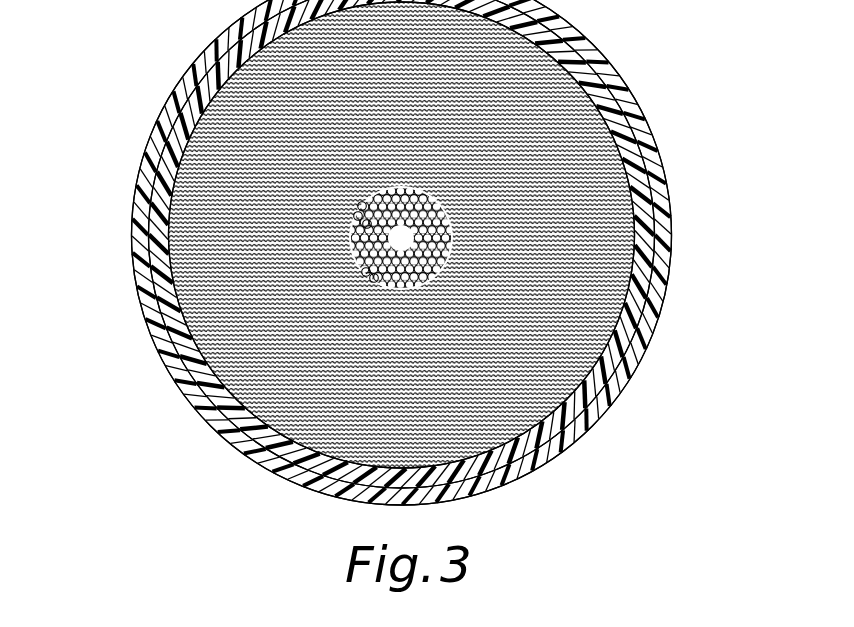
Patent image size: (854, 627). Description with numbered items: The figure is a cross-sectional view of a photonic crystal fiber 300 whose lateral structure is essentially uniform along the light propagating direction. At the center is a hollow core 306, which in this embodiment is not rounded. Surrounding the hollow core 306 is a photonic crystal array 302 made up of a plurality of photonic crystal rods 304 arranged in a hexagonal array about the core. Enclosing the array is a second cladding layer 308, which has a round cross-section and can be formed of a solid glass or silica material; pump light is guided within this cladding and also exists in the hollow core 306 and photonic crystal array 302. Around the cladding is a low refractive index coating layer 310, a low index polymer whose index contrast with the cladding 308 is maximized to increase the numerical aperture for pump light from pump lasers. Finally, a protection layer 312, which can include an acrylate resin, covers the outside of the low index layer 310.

The photonic crystal fiber 300 is at (140, 52).
The photonic crystal array 302 is at (460, 200).
The photonic crystal rods 304 is at (356, 226).
The hollow core 306 is at (363, 277).
The second cladding layer 308 is at (585, 217).
The low refractive index coating layer 310 is at (633, 320).
The protection layer 312 is at (612, 397).